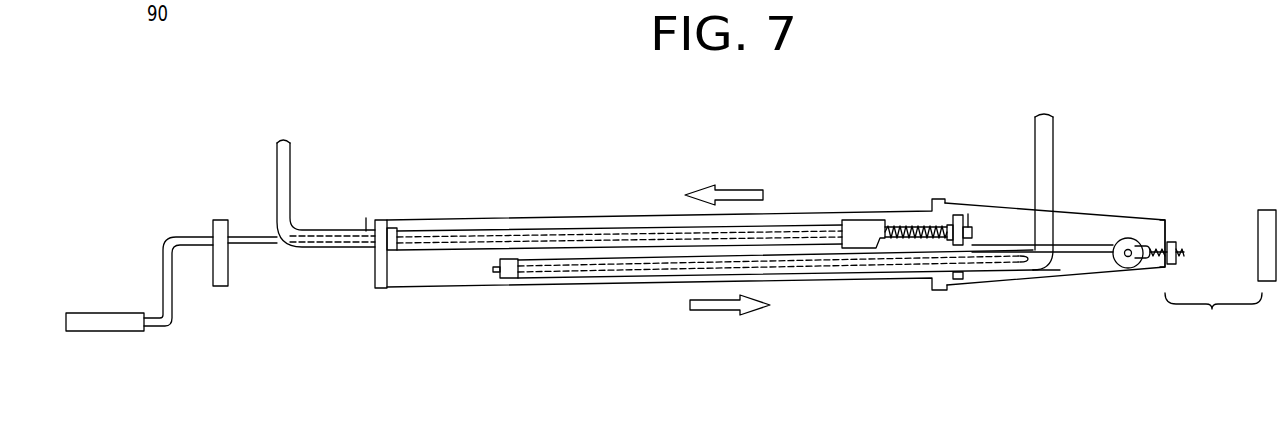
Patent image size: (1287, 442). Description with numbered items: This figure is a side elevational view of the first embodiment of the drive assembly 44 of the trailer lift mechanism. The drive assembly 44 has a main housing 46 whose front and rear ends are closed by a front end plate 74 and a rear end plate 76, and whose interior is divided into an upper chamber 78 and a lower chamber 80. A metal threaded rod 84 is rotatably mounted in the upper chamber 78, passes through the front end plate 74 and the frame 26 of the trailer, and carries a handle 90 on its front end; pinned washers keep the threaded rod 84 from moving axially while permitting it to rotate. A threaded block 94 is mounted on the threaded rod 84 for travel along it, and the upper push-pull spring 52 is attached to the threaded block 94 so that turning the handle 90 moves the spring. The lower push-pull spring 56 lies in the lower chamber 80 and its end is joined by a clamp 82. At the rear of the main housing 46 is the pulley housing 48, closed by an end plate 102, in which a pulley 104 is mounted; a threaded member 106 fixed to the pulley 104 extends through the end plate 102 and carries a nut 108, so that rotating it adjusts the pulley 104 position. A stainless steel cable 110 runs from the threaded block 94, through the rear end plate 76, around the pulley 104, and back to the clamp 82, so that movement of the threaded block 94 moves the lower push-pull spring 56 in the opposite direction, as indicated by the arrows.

The frame 26 is at (220, 288).
The drive assembly 44 is at (760, 134).
The main housing 46 is at (811, 213).
The pulley housing 48 is at (1088, 212).
The push-pull spring 52 is at (290, 172).
The push-pull spring 56 is at (1053, 160).
The front end plate 74 is at (380, 290).
The rear end plate 76 is at (960, 280).
The upper chamber 78 is at (513, 220).
The lower chamber 80 is at (472, 288).
The clamp 82 is at (518, 279).
The threaded rod 84 is at (258, 232).
The handle 90 is at (163, 262).
The threaded block 94 is at (868, 220).
The end plate 102 is at (1155, 220).
The pulley 104 is at (1133, 268).
The threaded member 106 is at (1180, 260).
The nut 108 is at (1170, 242).
The cable 110 is at (1053, 272).